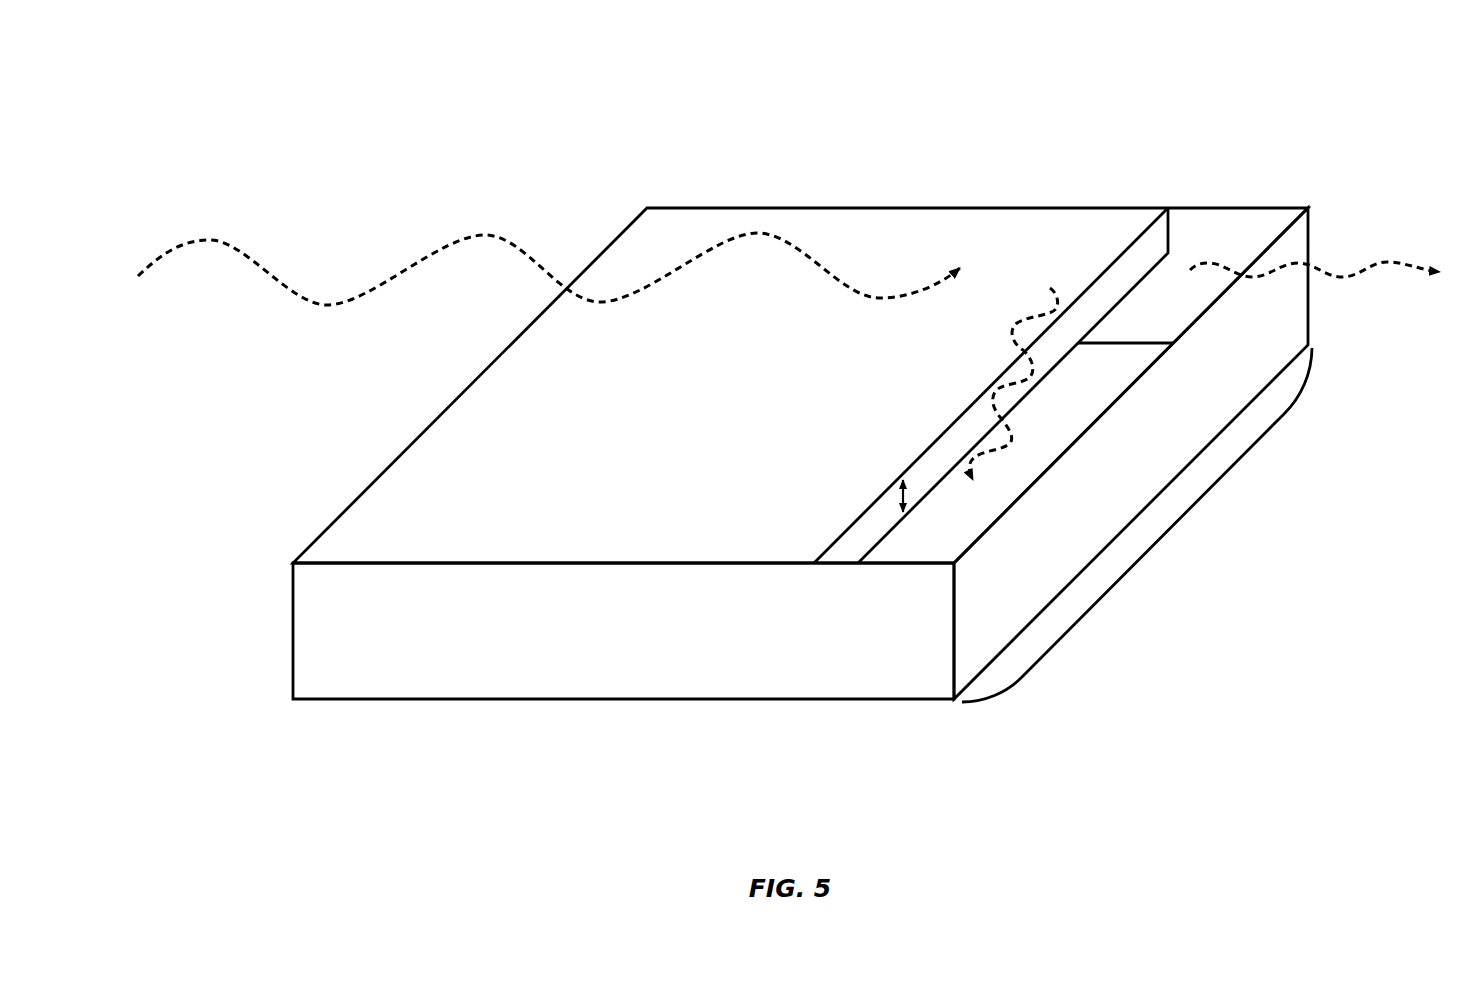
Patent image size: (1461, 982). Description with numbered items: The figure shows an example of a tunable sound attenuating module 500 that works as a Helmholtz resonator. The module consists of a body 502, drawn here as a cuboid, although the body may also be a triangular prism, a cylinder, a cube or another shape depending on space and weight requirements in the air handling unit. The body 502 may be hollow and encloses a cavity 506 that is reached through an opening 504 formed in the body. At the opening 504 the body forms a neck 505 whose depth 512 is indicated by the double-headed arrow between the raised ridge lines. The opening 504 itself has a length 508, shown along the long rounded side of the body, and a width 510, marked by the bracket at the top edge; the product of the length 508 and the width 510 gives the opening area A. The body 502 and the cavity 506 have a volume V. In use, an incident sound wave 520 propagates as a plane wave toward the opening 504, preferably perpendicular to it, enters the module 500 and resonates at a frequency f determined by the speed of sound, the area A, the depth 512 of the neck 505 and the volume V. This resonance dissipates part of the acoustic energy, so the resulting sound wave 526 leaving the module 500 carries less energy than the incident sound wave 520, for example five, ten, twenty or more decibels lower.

The tunable sound attenuating module 500 is at (186, 84).
The body 502 is at (657, 208).
The opening 504 is at (1156, 184).
The neck 505 is at (1130, 246).
The cavity 506 is at (1322, 202).
The length 508 is at (1157, 543).
The width 510 is at (1173, 207).
The depth 512 is at (899, 505).
The incident sound wave 520 is at (423, 262).
The resulting sound wave 526 is at (1367, 272).